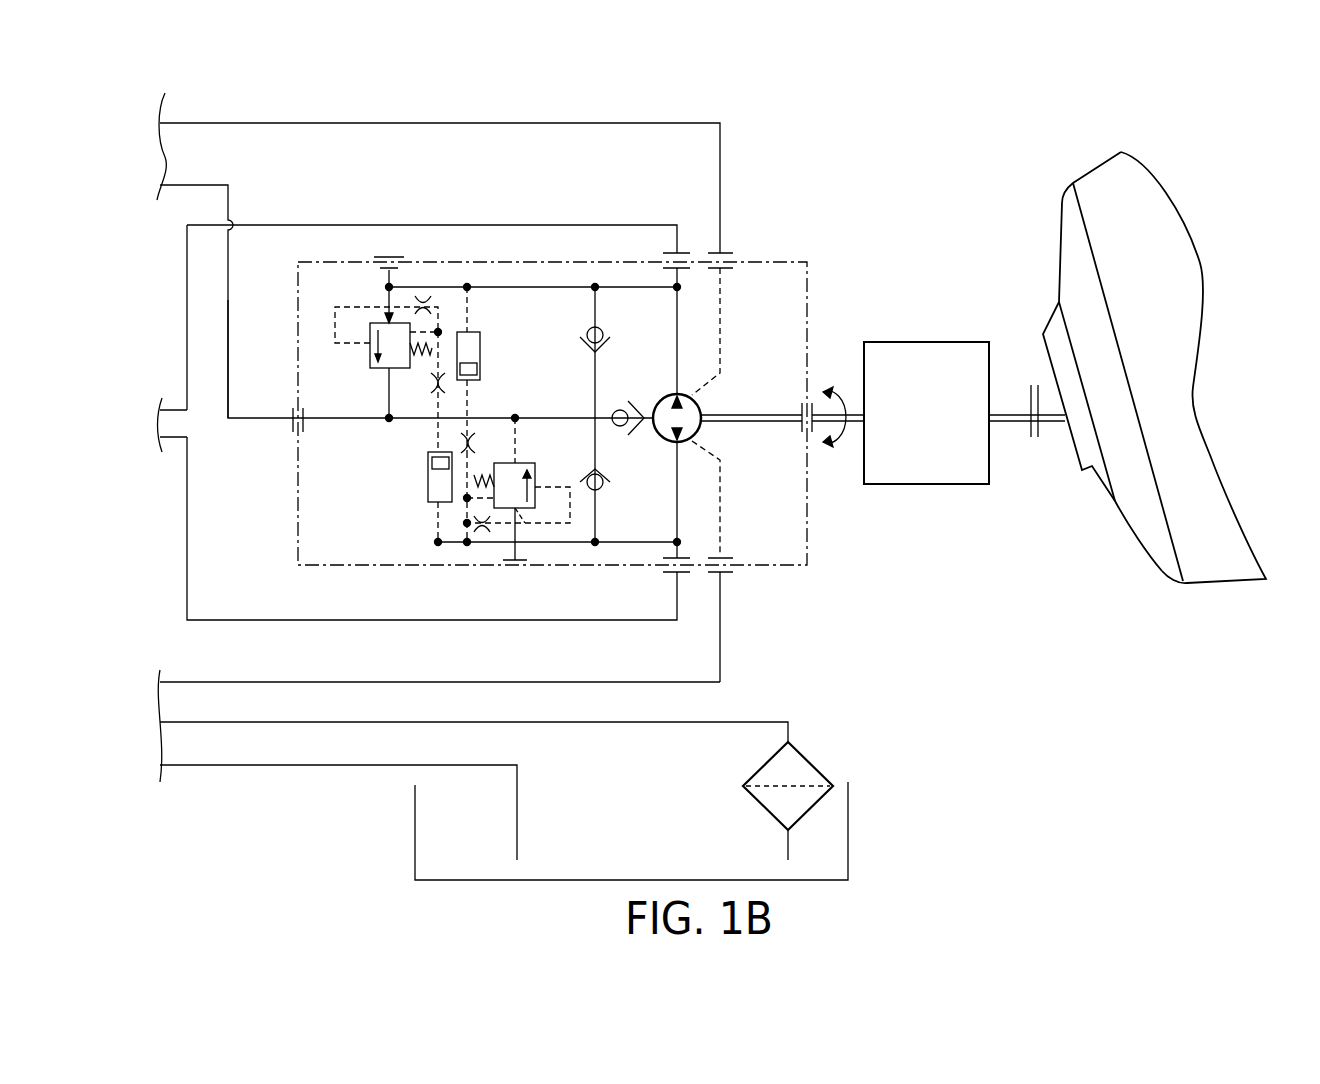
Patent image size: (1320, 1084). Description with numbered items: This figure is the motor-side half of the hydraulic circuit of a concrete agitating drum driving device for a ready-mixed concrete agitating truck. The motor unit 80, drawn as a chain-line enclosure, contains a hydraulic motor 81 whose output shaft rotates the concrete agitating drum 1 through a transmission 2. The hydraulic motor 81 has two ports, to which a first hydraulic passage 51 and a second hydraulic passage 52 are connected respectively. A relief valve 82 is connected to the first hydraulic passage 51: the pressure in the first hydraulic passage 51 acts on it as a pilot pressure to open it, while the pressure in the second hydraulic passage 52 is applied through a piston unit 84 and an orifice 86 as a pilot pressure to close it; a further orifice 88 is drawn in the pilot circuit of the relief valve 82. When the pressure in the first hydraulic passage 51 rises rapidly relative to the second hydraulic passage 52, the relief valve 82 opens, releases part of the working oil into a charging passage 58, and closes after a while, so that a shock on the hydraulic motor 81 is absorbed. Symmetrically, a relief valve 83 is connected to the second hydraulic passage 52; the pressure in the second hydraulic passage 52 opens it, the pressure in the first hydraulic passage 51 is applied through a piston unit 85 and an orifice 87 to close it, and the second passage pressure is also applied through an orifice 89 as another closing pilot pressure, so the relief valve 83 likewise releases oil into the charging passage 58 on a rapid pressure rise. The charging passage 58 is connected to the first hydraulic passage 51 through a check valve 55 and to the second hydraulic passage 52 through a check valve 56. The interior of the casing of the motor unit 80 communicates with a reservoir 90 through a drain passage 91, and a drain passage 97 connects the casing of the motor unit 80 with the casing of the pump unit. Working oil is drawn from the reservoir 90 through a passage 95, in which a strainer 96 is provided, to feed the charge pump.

The concrete agitating drum 1 is at (1091, 163).
The transmission 2 is at (923, 341).
The first hydraulic passage 51 is at (313, 223).
The second hydraulic passage 52 is at (350, 622).
The check valve 55 is at (588, 346).
The check valve 56 is at (606, 488).
The charging passage 58 is at (229, 390).
The motor unit 80 is at (790, 566).
The hydraulic motor 81 is at (660, 396).
The relief valve 82 is at (372, 360).
The relief valve 83 is at (537, 470).
The piston unit 84 is at (427, 485).
The piston unit 85 is at (482, 346).
The orifice 86 is at (432, 384).
The orifice 87 is at (462, 444).
The orifice 88 is at (420, 293).
The orifice 89 is at (485, 531).
The reservoir 90 is at (848, 862).
The drain passage 91 is at (544, 122).
The passage 95 is at (760, 722).
The strainer 96 is at (810, 757).
The drain passage 97 is at (647, 681).